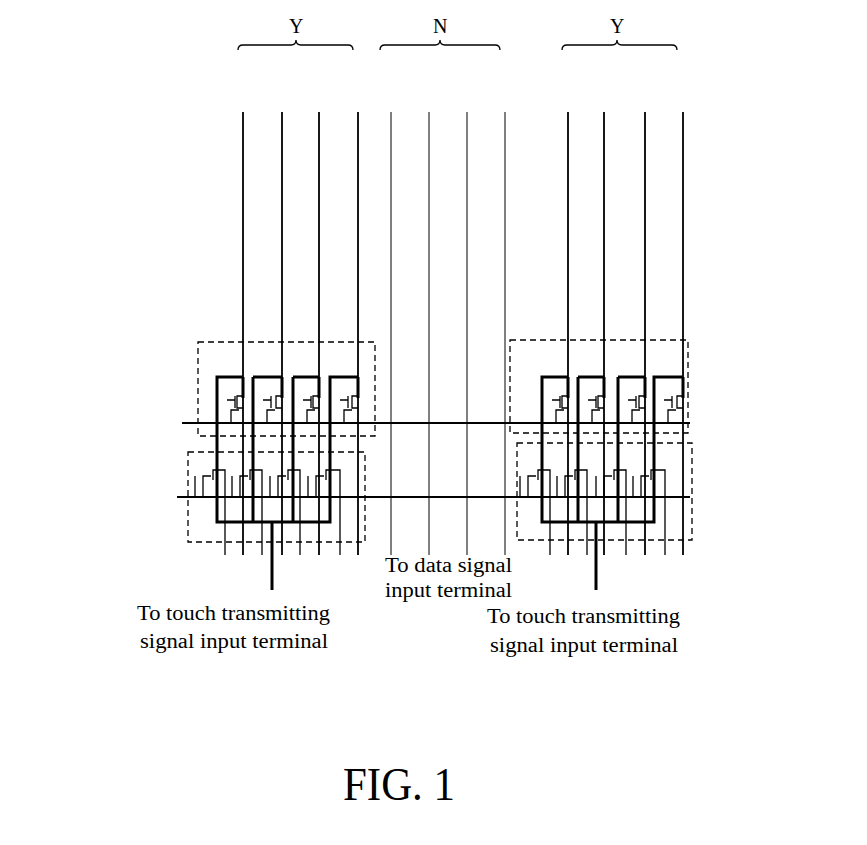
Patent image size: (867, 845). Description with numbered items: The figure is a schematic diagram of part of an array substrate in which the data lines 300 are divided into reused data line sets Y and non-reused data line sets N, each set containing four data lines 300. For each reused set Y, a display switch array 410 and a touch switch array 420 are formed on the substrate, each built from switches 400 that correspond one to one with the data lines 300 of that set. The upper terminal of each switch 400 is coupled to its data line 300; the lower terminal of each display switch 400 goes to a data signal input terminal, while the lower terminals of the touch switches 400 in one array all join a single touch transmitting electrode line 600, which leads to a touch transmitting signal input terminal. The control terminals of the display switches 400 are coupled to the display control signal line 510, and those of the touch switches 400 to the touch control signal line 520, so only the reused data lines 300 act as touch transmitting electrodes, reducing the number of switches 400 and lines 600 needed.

The data line 300 is at (243, 145).
The switch 400 is at (212, 398).
The display switch array 410 is at (218, 342).
The touch switch array 420 is at (188, 452).
The display control signal line 510 is at (185, 420).
The touch control signal line 520 is at (177, 497).
The touch transmitting electrode line 600 is at (275, 557).